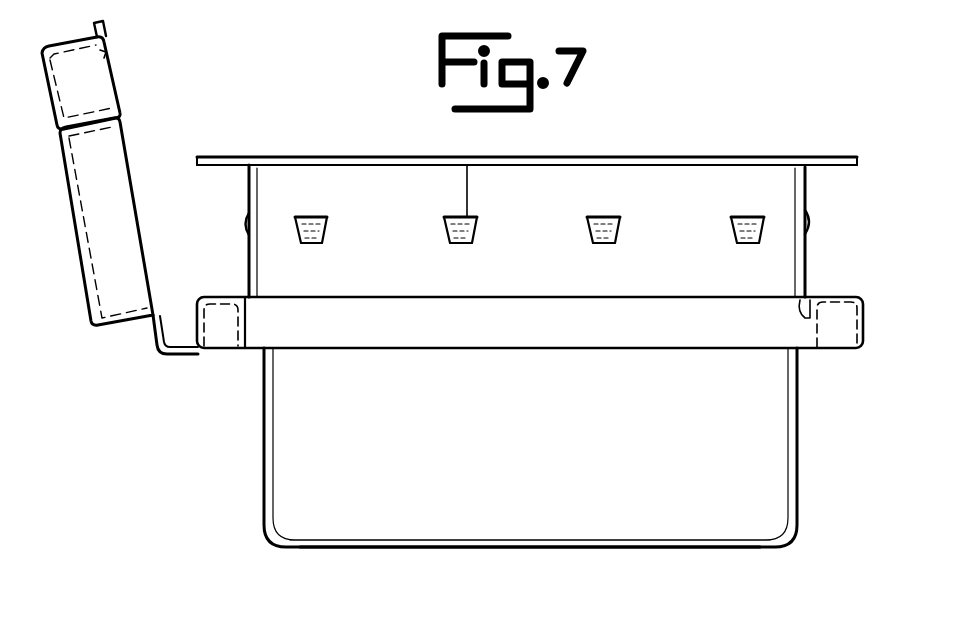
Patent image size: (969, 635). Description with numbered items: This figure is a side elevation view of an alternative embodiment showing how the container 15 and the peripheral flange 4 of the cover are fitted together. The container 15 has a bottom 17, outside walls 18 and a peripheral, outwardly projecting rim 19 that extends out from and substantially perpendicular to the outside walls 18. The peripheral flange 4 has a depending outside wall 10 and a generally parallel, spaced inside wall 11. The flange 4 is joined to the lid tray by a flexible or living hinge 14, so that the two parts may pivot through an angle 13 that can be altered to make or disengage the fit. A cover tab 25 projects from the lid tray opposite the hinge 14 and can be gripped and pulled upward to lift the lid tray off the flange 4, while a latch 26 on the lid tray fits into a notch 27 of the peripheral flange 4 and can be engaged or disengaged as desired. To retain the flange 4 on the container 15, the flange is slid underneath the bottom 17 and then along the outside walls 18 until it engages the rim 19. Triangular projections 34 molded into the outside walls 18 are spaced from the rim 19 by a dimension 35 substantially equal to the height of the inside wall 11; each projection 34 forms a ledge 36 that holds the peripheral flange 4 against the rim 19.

The peripheral flange 4 is at (383, 330).
The depending outside wall 10 is at (534, 340).
The inside wall 11 is at (810, 292).
The angle 13 is at (147, 252).
The hinge 14 is at (157, 357).
The container 15 is at (765, 452).
The bottom 17 is at (653, 548).
The outside walls 18 is at (575, 438).
The rim 19 is at (197, 159).
The cover tab 25 is at (105, 28).
The latch 26 is at (103, 52).
The notch 27 is at (865, 342).
The triangular projection 34 is at (243, 228).
The dimension 35 is at (470, 184).
The ledge 36 is at (243, 218).